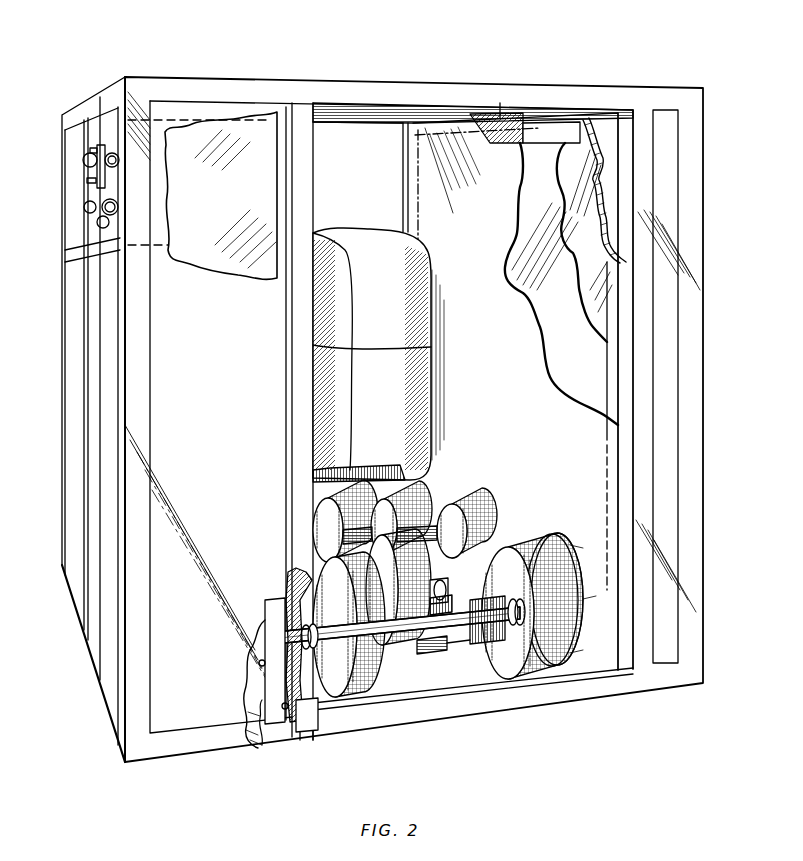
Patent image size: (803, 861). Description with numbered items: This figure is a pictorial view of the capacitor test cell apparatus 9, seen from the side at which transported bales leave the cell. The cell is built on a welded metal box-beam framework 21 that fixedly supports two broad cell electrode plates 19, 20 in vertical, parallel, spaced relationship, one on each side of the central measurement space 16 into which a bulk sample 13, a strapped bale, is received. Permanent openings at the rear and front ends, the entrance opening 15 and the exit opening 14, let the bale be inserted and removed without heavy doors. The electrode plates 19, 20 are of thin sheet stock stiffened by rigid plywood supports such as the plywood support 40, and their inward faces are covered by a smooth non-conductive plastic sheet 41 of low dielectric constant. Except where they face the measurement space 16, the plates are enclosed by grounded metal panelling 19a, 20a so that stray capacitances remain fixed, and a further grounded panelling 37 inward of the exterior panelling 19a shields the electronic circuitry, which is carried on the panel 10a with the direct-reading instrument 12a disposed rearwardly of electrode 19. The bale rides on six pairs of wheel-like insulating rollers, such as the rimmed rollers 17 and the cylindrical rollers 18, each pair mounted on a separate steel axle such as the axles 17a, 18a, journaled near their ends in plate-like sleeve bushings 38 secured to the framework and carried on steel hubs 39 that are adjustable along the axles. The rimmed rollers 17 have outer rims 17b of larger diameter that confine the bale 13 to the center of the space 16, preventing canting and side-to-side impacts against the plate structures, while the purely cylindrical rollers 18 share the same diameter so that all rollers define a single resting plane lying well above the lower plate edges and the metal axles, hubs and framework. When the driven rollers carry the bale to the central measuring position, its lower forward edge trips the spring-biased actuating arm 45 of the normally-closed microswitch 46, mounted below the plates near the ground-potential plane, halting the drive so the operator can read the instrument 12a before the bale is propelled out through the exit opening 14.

The capacitor test cell apparatus 9 is at (660, 67).
The panel 10a is at (97, 137).
The direct-reading instrument 12a is at (97, 186).
The bulk sample 13 is at (392, 323).
The front opening 14 is at (588, 435).
The rear opening 15 is at (368, 152).
The central measurement space 16 is at (450, 380).
The rimmed rollers 17 is at (396, 668).
The roller axle 17a is at (510, 647).
The outer rims 17b is at (432, 477).
The cylindrical rollers 18 is at (437, 650).
The roller axle 18a is at (447, 643).
The cell electrode plate 19 is at (268, 600).
The grounded metal panelling 19a is at (168, 418).
The cell electrode plate 20 is at (563, 298).
The grounded metal panelling 20a is at (670, 296).
The metal box-beam framework 21 is at (508, 96).
The grounded panelling 37 is at (222, 195).
The sleeve bushings 38 is at (258, 737).
The hubs 39 is at (445, 577).
The plywood support 40 is at (590, 238).
The non-conductive plastic sheet 41 is at (480, 256).
The actuating arm 45 is at (402, 460).
The microswitch 46 is at (467, 653).